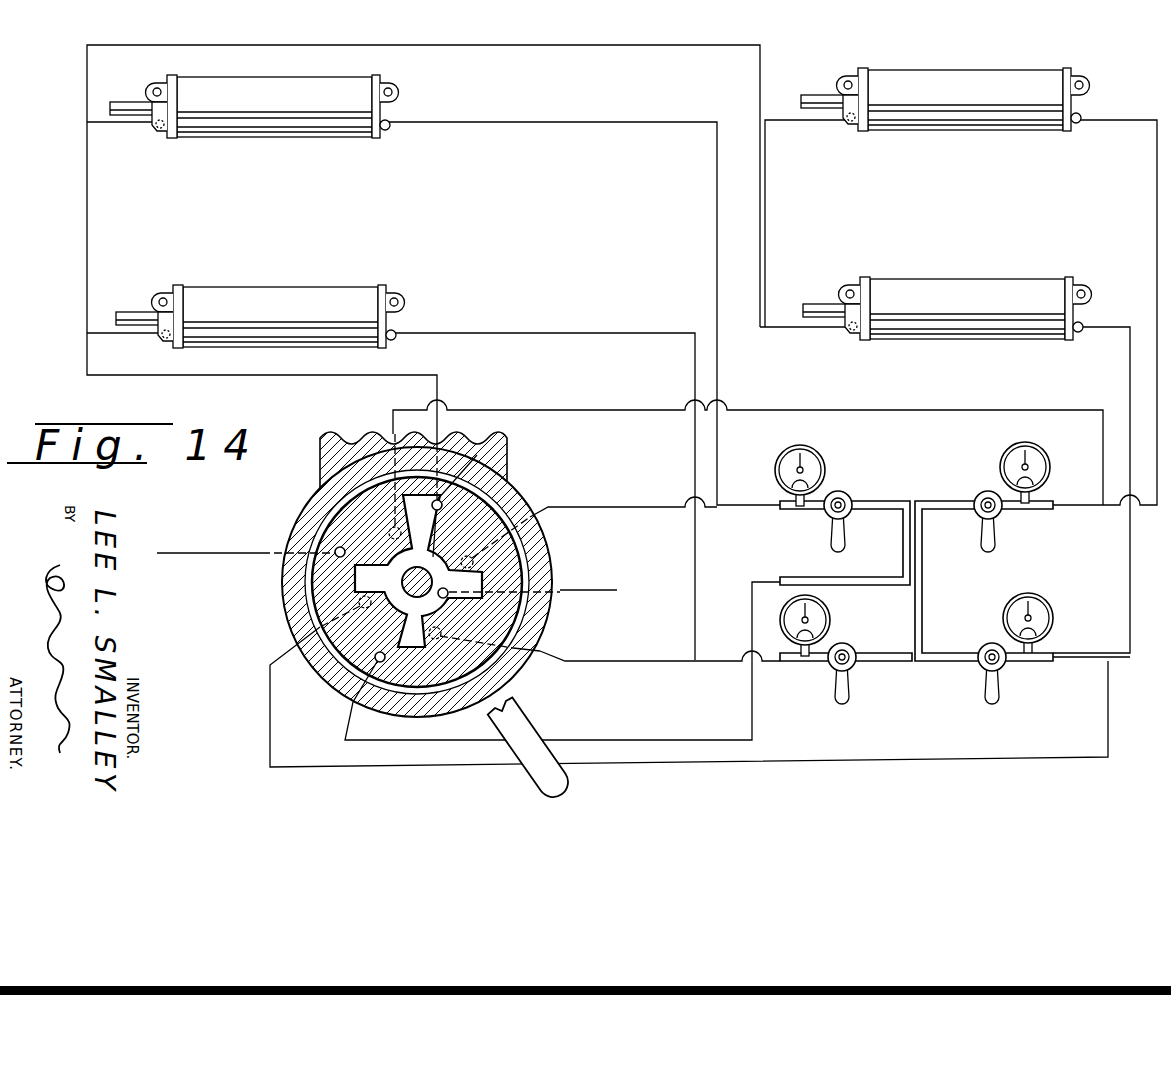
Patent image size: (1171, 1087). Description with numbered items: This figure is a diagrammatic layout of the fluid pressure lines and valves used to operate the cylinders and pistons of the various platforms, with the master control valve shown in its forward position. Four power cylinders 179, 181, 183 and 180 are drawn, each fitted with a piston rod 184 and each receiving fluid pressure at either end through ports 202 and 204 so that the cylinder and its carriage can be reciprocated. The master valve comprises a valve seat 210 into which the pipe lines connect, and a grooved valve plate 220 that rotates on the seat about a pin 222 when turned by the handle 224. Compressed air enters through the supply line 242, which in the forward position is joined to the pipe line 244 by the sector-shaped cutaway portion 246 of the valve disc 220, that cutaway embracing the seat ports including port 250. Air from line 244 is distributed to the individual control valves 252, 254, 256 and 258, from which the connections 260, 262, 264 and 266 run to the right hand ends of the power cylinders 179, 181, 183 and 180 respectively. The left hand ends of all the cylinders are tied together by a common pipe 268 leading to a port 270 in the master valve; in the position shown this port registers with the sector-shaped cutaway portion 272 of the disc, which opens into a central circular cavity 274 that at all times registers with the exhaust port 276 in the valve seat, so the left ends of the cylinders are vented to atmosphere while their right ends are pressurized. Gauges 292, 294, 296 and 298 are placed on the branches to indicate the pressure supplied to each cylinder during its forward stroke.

The power cylinder 179 is at (345, 293).
The power cylinder 180 is at (1032, 290).
The power cylinder 181 is at (343, 122).
The power cylinder 183 is at (1025, 80).
The piston rod 184 is at (124, 102).
The port 202 is at (388, 130).
The port 204 is at (160, 132).
The valve seat 210 is at (518, 604).
The grooved valve plate 220 is at (360, 508).
The pin 222 is at (402, 582).
The handle 224 is at (566, 794).
The compressed air supply line 242 is at (193, 553).
The pipe line 244 is at (666, 737).
The sector-shaped cutaway portion 246 is at (341, 611).
The port 250 is at (376, 654).
The control valve 252 is at (858, 666).
The control valve 254 is at (855, 497).
The control valve 256 is at (983, 492).
The control valve 258 is at (985, 648).
The connection 260 is at (700, 545).
The connection 262 is at (717, 205).
The connection 264 is at (1157, 208).
The connection 266 is at (1130, 375).
The common pipe 268 is at (110, 380).
The port 270 is at (427, 518).
The sector-shaped cutaway portion 272 is at (472, 496).
The central circular cavity 274 is at (594, 527).
The exhaust port 276 is at (423, 603).
The gauge 292 is at (825, 456).
The gauge 294 is at (826, 610).
The gauge 296 is at (1040, 451).
The gauge 298 is at (335, 555).